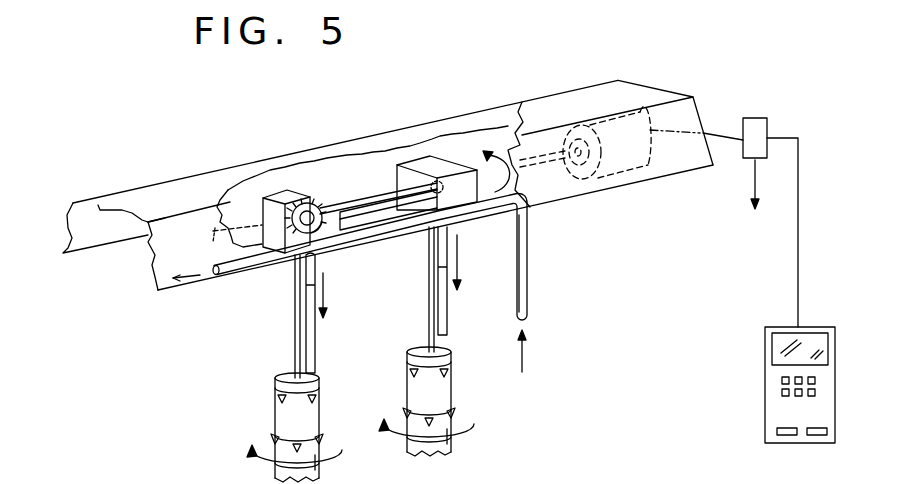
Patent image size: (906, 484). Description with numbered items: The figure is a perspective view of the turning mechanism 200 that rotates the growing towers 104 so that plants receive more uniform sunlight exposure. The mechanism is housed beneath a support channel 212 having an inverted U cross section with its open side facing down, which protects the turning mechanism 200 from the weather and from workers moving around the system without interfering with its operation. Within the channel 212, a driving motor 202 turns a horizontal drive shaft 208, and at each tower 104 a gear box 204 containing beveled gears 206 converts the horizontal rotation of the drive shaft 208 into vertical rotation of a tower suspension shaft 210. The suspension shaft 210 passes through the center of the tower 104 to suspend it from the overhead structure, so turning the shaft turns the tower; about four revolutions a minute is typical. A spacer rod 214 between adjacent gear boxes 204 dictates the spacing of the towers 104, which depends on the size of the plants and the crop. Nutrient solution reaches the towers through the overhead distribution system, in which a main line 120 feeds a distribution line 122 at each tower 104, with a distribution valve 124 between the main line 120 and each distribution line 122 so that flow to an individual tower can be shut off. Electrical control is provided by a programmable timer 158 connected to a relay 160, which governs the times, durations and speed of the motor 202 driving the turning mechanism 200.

The growing tower 104 is at (267, 404).
The main line 120 is at (527, 295).
The distribution line 122 is at (440, 316).
The distribution valve 124 is at (300, 277).
The programmable timer 158 is at (783, 403).
The relay 160 is at (757, 122).
The turning mechanism 200 is at (483, 97).
The driving motor 202 is at (630, 127).
The gear box 204 is at (427, 155).
The beveled gears 206 is at (303, 190).
The drive shaft 208 is at (522, 102).
The tower suspension shaft 210 is at (293, 332).
The support channel 212 is at (160, 188).
The spacer rod 214 is at (393, 213).